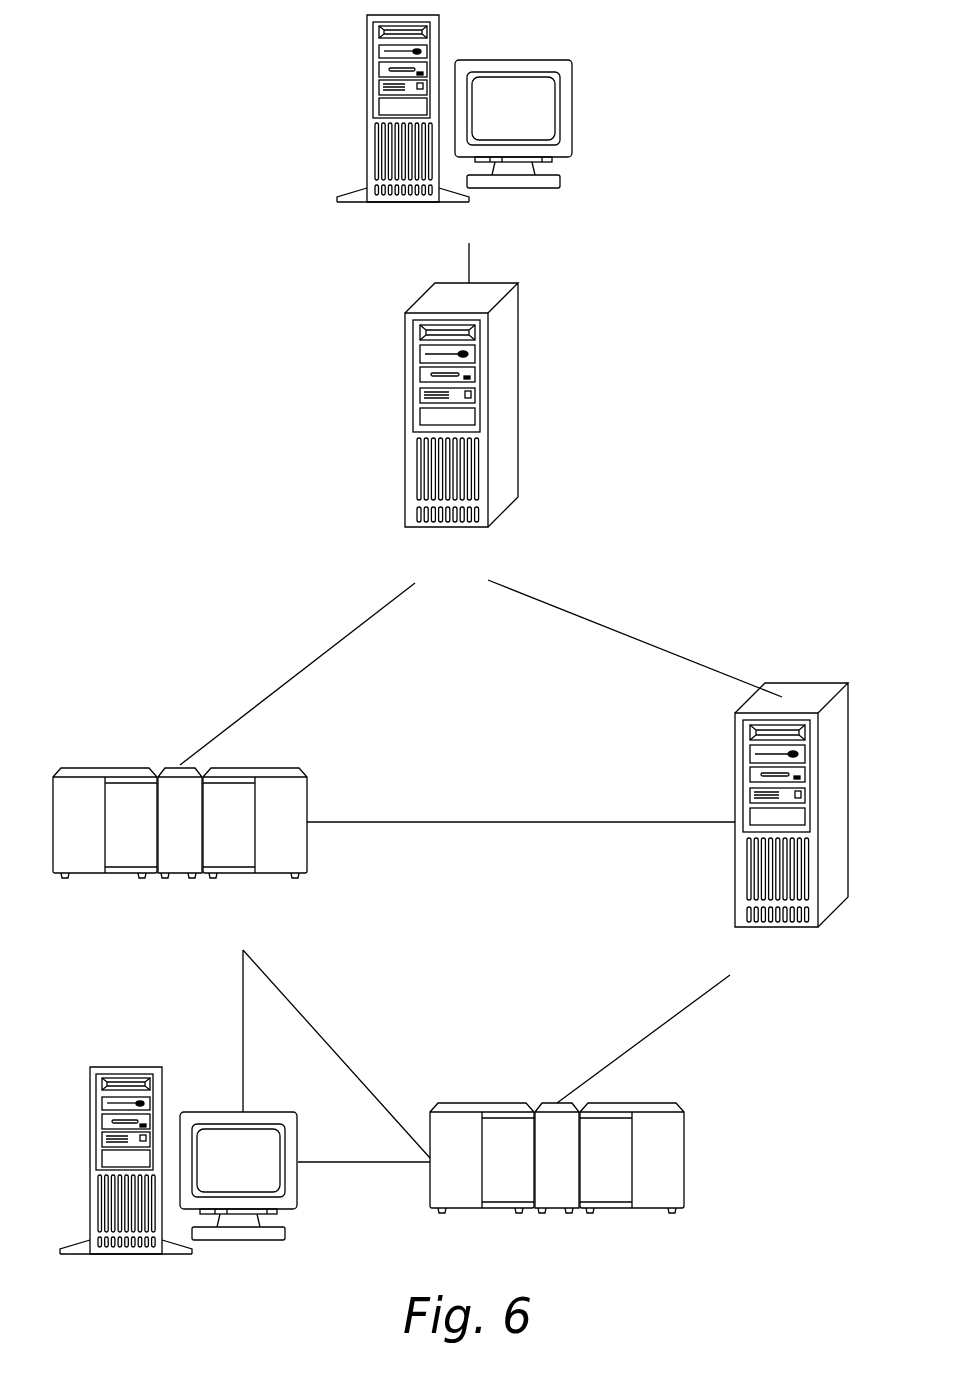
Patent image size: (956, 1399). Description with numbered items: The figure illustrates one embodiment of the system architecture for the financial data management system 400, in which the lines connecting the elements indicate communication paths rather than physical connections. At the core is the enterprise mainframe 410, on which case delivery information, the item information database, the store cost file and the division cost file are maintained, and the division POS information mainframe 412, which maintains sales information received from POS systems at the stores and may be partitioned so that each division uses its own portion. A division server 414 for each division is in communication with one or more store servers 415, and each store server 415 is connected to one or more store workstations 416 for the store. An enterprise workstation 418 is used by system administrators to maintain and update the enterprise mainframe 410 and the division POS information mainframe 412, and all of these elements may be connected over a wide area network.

The financial data management system 400 is at (150, 175).
The enterprise mainframe 410 is at (685, 1160).
The division POS information mainframe 412 is at (107, 768).
The division server 414 is at (735, 762).
The store server 415 is at (505, 402).
The store workstation 416 is at (573, 110).
The enterprise workstation 418 is at (90, 1095).